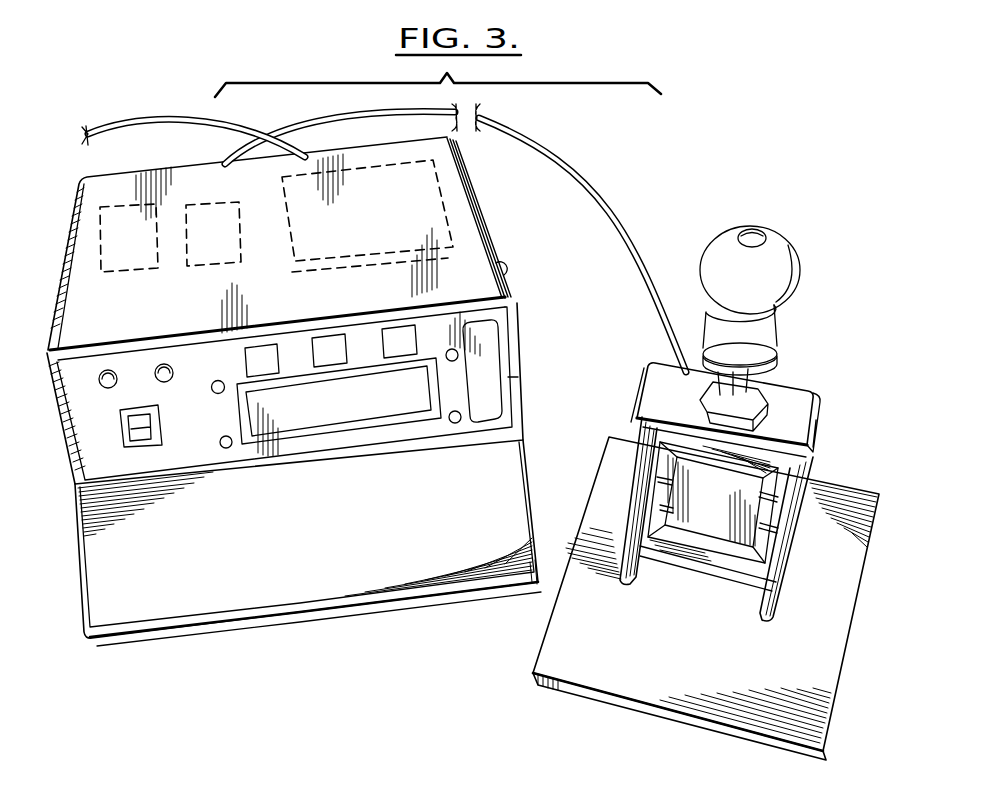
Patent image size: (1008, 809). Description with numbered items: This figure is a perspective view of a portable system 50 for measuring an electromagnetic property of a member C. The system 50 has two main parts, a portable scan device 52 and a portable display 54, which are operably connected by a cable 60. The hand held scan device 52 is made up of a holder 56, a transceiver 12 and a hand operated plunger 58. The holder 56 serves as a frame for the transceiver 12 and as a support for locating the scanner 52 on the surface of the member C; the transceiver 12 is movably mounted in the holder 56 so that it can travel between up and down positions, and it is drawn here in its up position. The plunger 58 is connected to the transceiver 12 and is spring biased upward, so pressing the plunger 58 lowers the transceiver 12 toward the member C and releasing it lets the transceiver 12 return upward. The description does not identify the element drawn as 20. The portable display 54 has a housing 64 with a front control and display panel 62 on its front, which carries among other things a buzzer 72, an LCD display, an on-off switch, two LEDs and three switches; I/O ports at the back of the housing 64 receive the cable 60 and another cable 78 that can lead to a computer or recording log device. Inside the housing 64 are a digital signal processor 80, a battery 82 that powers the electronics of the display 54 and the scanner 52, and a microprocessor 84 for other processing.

The transceiver 12 is at (723, 514).
The lower frame member 20 is at (703, 563).
The portable system 50 is at (703, 153).
The portable scan device 52 is at (797, 385).
The portable display 54 is at (75, 206).
The holder 56 is at (649, 385).
The hand operated plunger 58 is at (785, 240).
The cable 60 is at (561, 157).
The front control and display panel 62 is at (192, 443).
The housing 64 is at (479, 218).
The buzzer 72 is at (483, 348).
The cable 78 is at (122, 127).
The digital signal processor 80 is at (138, 256).
The battery 82 is at (374, 229).
The microprocessor 84 is at (222, 243).
The member C is at (643, 707).